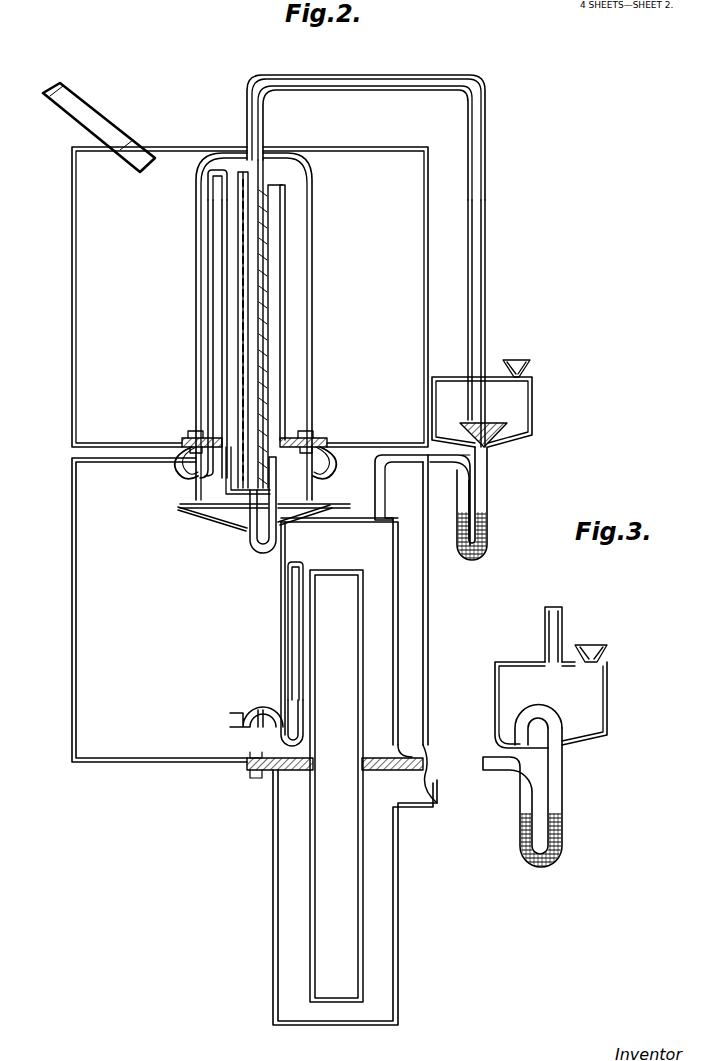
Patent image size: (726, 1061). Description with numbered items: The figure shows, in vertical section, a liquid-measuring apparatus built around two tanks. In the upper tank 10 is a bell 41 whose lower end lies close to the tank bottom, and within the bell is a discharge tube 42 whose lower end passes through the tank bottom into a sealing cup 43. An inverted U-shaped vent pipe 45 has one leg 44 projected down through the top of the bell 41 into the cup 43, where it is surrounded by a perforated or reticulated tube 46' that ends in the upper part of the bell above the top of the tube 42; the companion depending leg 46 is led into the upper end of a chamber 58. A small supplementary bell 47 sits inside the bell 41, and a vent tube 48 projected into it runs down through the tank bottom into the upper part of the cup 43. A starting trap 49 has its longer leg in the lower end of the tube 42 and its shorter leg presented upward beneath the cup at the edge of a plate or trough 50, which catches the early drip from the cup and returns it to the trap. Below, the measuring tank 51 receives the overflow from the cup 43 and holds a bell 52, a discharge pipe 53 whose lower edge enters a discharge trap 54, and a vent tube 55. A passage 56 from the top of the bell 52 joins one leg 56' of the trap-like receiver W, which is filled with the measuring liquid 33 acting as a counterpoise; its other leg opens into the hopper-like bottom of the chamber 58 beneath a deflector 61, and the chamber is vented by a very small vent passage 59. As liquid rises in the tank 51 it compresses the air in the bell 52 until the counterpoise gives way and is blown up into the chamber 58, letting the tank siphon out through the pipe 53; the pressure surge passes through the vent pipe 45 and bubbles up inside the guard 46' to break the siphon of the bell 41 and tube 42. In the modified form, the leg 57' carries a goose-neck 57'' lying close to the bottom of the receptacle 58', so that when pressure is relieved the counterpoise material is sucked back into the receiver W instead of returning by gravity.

In FIG. 2, the tank 10 is at (73, 352).
In FIG. 2, the bell 41 is at (313, 290).
In FIG. 2, the discharge tube 42 is at (281, 351).
In FIG. 2, the sealing cup 43 is at (217, 515).
In FIG. 2, the leg 44 is at (262, 398).
In FIG. 2, the inverted U-shaped vent pipe 45 is at (427, 78).
In FIG. 2, the depending leg 46 is at (501, 323).
In FIG. 3, the depending leg 46 is at (579, 634).
In FIG. 2, the perforated or reticulated tube 46' is at (312, 324).
In FIG. 2, the supplementary bell 47 is at (200, 184).
In FIG. 2, the vent tube 48 is at (208, 337).
In FIG. 2, the sealing tube or starting trap 49 is at (298, 505).
In FIG. 2, the plate or trough 50 is at (241, 530).
In FIG. 2, the measuring tank 51 is at (73, 697).
In FIG. 2, the bell 52 is at (398, 652).
In FIG. 2, the discharge pipe 53 is at (336, 786).
In FIG. 2, the discharge trap 54 is at (388, 918).
In FIG. 2, the vent tube 55 is at (289, 643).
In FIG. 2, the passage 56 is at (422, 500).
In FIG. 2, the leg 56' is at (450, 482).
In FIG. 3, the leg 57' is at (546, 797).
In FIG. 3, the goose-neck 57'' is at (538, 712).
In FIG. 2, the chamber 58 is at (505, 412).
In FIG. 3, the receptacle 58' is at (566, 696).
In FIG. 2, the vent passage 59 is at (520, 364).
In FIG. 2, the deflector 61 is at (496, 434).
In FIG. 2, the measuring liquid 33 is at (489, 525).
In FIG. 3, the measuring liquid 33 is at (563, 840).
In FIG. 2, the trap-like receiver W is at (476, 553).
In FIG. 3, the trap-like receiver W is at (562, 862).